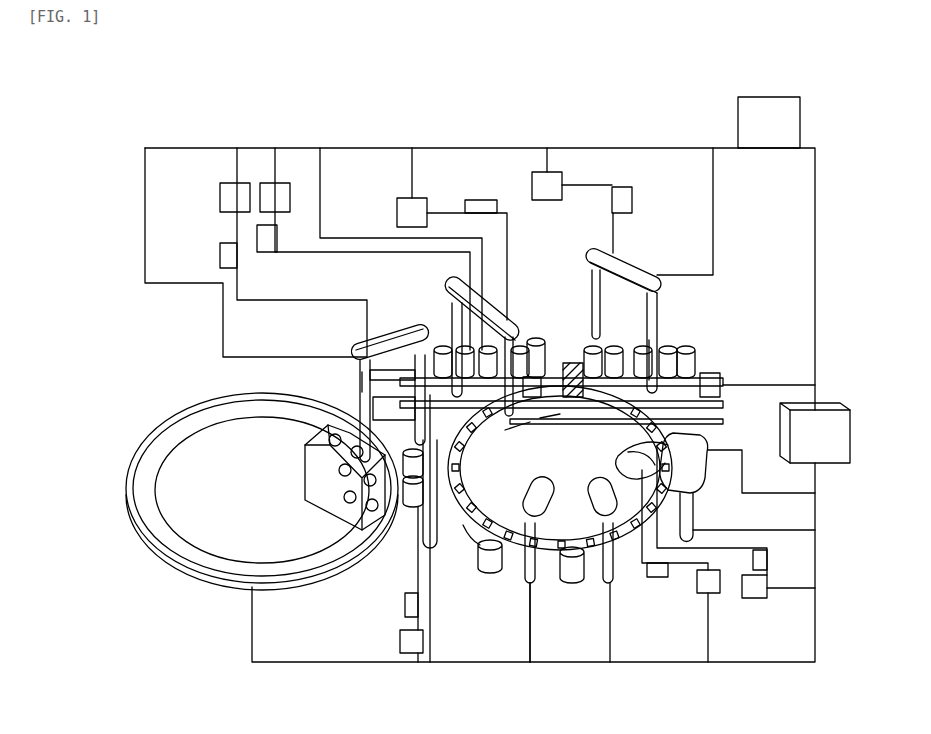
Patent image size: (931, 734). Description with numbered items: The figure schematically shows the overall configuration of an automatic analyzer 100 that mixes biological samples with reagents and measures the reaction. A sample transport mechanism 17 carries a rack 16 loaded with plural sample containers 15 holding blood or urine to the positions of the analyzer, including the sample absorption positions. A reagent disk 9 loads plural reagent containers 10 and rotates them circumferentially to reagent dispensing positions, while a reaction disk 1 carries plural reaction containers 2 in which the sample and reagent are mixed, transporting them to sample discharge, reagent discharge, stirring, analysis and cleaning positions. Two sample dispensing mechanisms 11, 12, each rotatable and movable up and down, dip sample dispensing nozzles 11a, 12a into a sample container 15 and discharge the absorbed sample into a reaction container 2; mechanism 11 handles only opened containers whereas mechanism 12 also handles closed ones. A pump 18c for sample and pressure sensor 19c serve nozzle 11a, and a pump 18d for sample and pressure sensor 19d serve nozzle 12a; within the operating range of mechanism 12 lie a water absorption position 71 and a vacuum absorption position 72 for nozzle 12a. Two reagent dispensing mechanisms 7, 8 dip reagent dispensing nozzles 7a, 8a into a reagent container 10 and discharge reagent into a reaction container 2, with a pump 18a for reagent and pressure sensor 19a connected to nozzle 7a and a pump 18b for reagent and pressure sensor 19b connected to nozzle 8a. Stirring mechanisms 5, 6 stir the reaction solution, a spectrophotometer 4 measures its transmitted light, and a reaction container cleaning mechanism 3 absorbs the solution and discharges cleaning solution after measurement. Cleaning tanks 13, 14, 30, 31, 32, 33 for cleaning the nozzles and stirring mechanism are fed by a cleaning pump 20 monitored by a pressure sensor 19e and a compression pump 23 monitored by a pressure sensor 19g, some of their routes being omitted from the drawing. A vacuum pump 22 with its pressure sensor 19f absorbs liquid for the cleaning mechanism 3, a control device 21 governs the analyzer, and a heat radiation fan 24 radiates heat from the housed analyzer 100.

The automatic analyzer 100 is at (281, 57).
The reaction disk 1 is at (461, 530).
The reaction container 2 is at (518, 560).
The reaction container cleaning mechanism 3 is at (703, 500).
The spectrophotometer 4 is at (700, 440).
The stirring mechanism 5 is at (613, 583).
The stirring mechanism 6 is at (532, 583).
The reagent dispensing mechanism 7 is at (400, 333).
The reagent dispensing nozzle 7a is at (355, 400).
The reagent dispensing mechanism 8 is at (432, 548).
The reagent dispensing nozzle 8a is at (483, 455).
The reagent disk 9 is at (180, 405).
The reagent container 10 is at (333, 518).
The sample dispensing mechanism 11 is at (487, 282).
The sample dispensing nozzle 11a is at (540, 422).
The sample dispensing mechanism 12 is at (635, 262).
The sample dispensing nozzle 12a is at (589, 292).
The cleaning tank 13 is at (536, 350).
The cleaning tank 14 is at (572, 362).
The sample container 15 is at (703, 360).
The rack 16 is at (717, 372).
The sample transport mechanism 17 is at (730, 413).
The pump for reagent 18a is at (236, 182).
The pump for reagent 18b is at (285, 182).
The pump for sample 18c is at (405, 197).
The pump for sample 18d is at (545, 171).
The pressure sensor 19a is at (220, 250).
The pressure sensor 19b is at (268, 253).
The pressure sensor 19c is at (480, 199).
The pressure sensor 19d is at (620, 186).
The pressure sensor 19e is at (770, 553).
The pressure sensor 19f is at (651, 578).
The pressure sensor 19g is at (404, 608).
The cleaning pump 20 is at (757, 599).
The control device 21 is at (832, 402).
The vacuum pump 22 is at (712, 594).
The compression pump 23 is at (400, 645).
The heat radiation fan 24 is at (770, 97).
The cleaning tank 30 is at (572, 584).
The cleaning tank 31 is at (486, 574).
The cleaning tank 32 is at (408, 480).
The cleaning tank 33 is at (406, 508).
The water absorption position 71 is at (659, 312).
The vacuum absorption position 72 is at (659, 337).